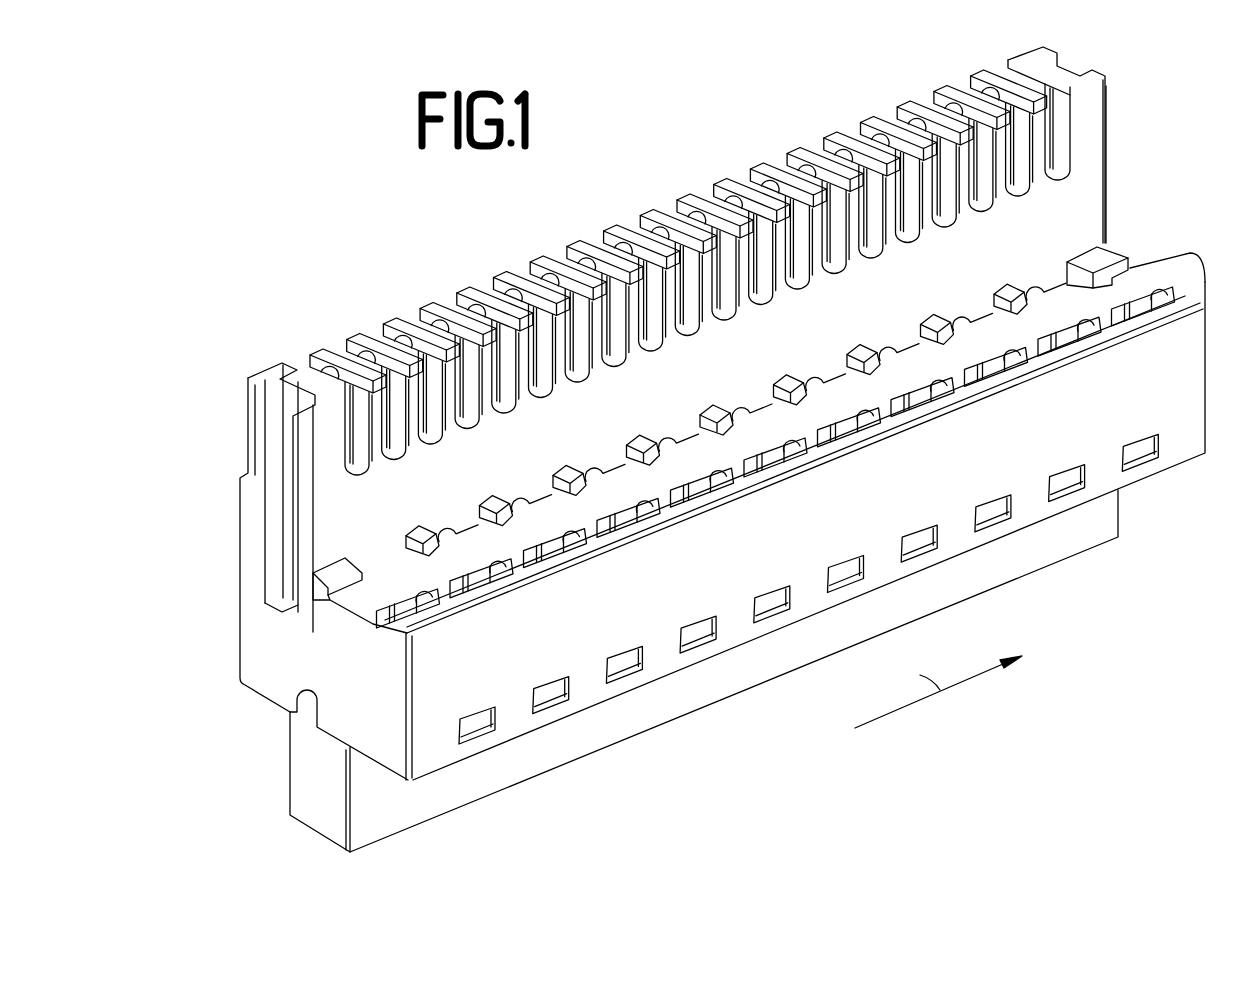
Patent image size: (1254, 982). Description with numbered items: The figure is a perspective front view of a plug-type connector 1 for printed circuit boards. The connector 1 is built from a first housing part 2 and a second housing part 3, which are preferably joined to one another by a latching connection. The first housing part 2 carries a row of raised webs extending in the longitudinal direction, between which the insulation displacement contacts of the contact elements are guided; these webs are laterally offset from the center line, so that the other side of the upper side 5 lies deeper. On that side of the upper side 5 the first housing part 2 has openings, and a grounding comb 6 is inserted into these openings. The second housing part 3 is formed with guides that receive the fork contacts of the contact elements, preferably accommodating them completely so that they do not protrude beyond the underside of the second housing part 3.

The plug-type connector 1 is at (729, 437).
The first housing part 2 is at (243, 571).
The second housing part 3 is at (313, 795).
The upper side 5 is at (1034, 60).
The grounding comb 6 is at (1062, 312).